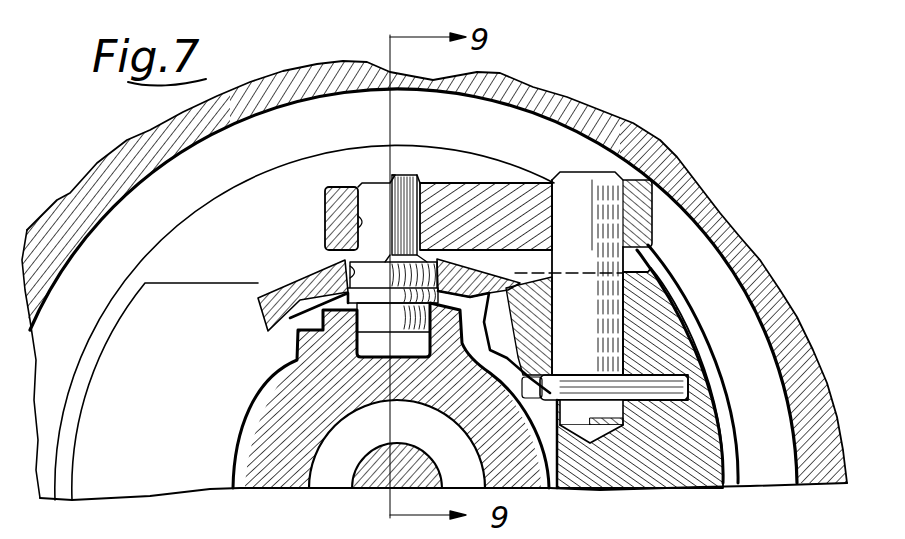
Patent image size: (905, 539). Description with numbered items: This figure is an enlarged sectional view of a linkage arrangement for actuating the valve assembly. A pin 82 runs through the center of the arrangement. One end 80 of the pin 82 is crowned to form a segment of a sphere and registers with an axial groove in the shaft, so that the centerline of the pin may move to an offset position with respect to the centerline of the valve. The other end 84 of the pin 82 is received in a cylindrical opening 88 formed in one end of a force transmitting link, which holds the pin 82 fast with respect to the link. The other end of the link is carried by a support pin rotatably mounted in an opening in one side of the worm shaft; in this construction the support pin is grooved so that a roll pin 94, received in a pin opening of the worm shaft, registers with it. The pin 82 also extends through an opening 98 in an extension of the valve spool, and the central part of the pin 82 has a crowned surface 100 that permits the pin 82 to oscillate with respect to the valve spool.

The end of pin 80 is at (327, 349).
The pin 82 is at (367, 203).
The other end of pin 84 is at (368, 182).
The cylindrical opening 88 is at (327, 221).
The roll pin 94 is at (712, 380).
The opening 98 is at (348, 270).
The crowned surface 100 is at (333, 331).